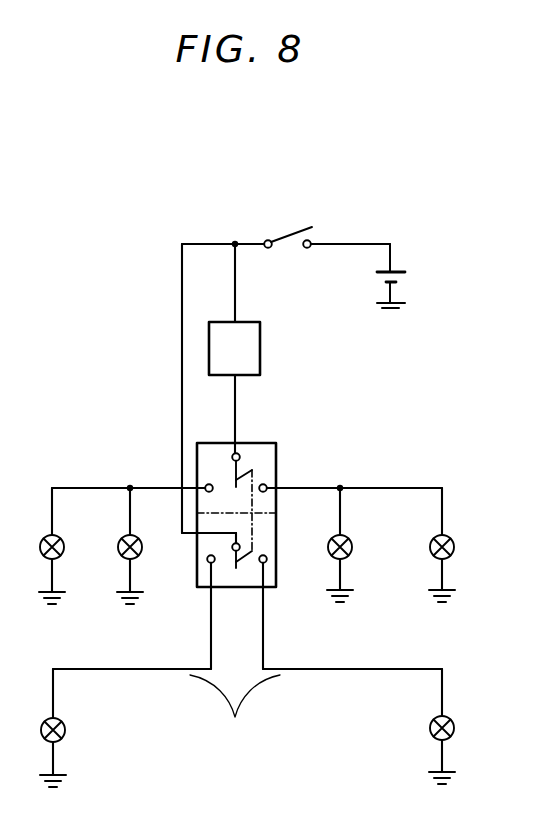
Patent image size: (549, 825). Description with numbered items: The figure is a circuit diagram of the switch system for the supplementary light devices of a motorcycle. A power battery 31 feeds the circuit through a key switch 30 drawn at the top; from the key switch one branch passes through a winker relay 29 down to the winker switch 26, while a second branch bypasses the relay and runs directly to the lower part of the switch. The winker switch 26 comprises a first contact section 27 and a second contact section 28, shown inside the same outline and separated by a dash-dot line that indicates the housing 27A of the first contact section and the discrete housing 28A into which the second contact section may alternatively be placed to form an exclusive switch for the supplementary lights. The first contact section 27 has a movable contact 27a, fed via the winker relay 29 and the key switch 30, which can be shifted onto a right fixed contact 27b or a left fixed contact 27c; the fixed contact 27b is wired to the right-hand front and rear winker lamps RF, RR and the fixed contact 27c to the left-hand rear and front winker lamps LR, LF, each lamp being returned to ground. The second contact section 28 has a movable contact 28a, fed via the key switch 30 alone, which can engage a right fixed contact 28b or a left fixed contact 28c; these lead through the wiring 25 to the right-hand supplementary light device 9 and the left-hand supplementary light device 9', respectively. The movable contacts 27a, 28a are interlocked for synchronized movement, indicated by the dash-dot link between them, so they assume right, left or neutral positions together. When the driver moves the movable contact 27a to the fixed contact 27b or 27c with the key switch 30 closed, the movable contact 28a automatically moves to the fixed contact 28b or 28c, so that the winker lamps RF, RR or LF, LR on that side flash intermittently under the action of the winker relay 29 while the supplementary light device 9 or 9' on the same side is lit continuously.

The right-hand supplementary light device 9 is at (77, 737).
The left-hand supplementary light device 9' is at (473, 729).
The lamp wiring 25 is at (235, 711).
The winker switch 26 is at (284, 456).
The first contact section 27 is at (288, 468).
The movable contact 27a is at (238, 470).
The fixed contact 27b is at (207, 483).
The fixed contact 27c is at (267, 494).
The housing 27A is at (207, 494).
The second contact section 28 is at (263, 542).
The movable contact 28a is at (243, 573).
The fixed contact 28b is at (205, 574).
The fixed contact 28c is at (272, 573).
The discrete housing 28A is at (205, 546).
The winker relay 29 is at (253, 338).
The key switch 30 is at (295, 225).
The power battery 31 is at (407, 275).
The right-hand front winker lamp RF is at (42, 553).
The right-hand rear winker lamp RR is at (118, 553).
The left-hand rear winker lamp LR is at (350, 552).
The left-hand front winker lamp LF is at (430, 549).